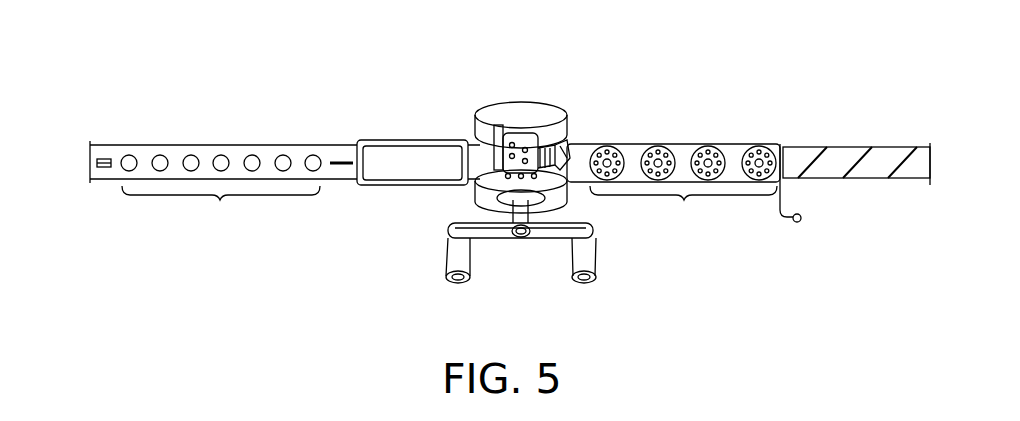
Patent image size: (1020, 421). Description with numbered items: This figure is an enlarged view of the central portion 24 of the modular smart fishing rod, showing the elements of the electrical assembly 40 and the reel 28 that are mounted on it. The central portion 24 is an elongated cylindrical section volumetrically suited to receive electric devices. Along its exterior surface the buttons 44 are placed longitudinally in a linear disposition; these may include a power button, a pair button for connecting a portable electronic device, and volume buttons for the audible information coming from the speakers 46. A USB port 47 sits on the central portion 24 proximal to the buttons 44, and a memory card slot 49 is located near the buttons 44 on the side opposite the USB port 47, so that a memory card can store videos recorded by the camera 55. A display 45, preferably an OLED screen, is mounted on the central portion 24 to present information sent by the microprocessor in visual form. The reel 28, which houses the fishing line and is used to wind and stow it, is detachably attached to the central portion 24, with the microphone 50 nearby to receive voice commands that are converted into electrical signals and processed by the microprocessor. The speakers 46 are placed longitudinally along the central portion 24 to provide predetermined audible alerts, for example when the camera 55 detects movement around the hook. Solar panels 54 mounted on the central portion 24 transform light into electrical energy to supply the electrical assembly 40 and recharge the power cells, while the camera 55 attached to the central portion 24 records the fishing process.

The central portion 24 is at (412, 140).
The reel 28 is at (525, 102).
The electrical assembly 40 is at (655, 136).
The buttons 44 is at (220, 200).
The display 45 is at (412, 185).
The speakers 46 is at (684, 200).
The USB port 47 is at (101, 168).
The memory card slot 49 is at (350, 168).
The microphone 50 is at (588, 158).
The solar panels 54 is at (800, 147).
The camera 55 is at (797, 223).